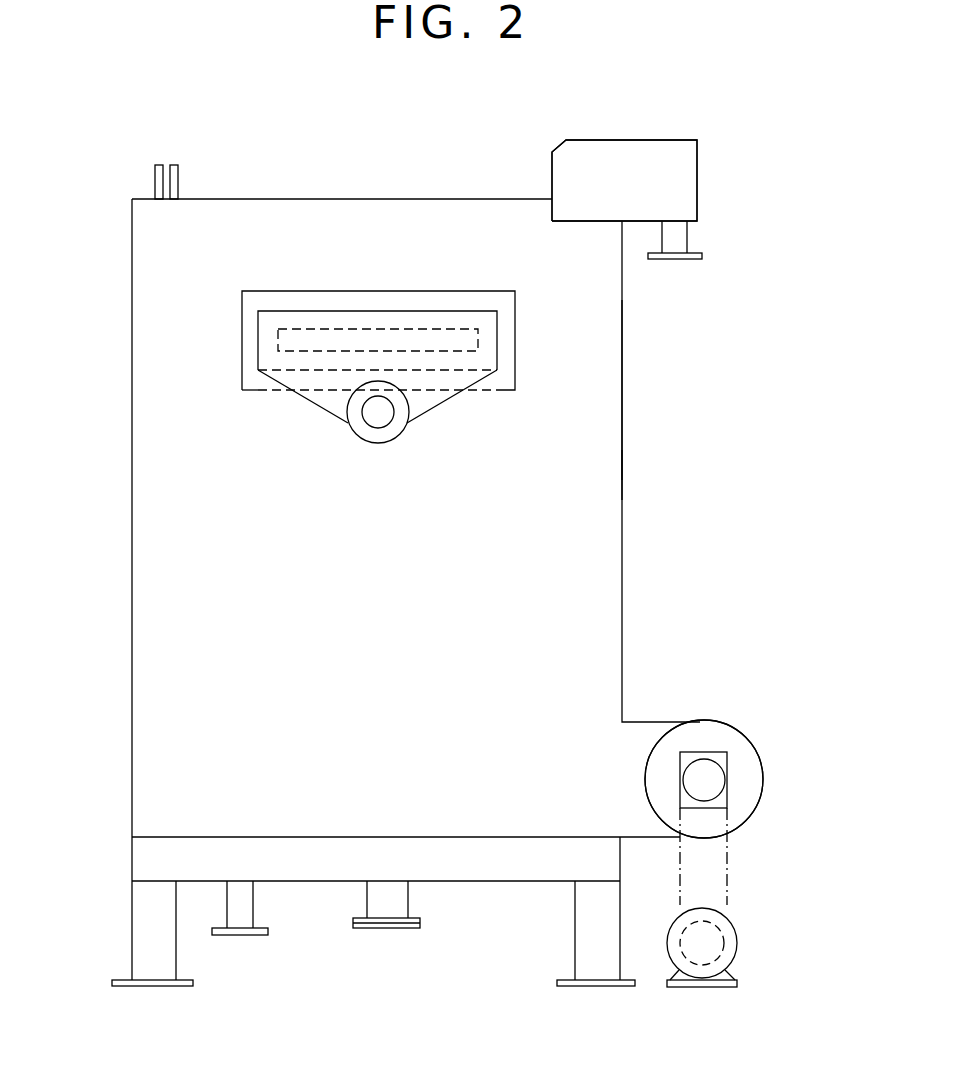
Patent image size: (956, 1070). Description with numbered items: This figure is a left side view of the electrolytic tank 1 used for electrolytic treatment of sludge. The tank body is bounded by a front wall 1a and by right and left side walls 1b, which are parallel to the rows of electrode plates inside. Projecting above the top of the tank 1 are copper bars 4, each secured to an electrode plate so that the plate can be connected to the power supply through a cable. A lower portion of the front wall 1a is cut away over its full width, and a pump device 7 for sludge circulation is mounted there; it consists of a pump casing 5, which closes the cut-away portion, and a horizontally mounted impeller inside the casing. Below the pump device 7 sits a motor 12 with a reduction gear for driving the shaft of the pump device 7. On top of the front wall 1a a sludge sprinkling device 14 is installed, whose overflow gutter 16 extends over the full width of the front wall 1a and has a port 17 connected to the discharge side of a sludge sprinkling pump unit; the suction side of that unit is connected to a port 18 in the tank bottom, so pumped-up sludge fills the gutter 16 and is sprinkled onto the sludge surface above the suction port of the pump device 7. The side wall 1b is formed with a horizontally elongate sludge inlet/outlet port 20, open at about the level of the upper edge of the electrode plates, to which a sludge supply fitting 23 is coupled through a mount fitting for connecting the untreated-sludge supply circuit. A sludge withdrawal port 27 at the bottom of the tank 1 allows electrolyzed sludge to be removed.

The electrolytic tank 1 is at (378, 550).
The front wall 1a is at (624, 400).
The side wall 1b is at (568, 482).
The copper bar 4 is at (159, 165).
The pump casing 5 is at (730, 738).
The pump device 7 is at (725, 701).
The motor 12 is at (710, 946).
The sludge sprinkling device 14 is at (696, 104).
The overflow gutter 16 is at (675, 189).
The port 17 is at (680, 240).
The port 18 is at (244, 912).
The sludge inlet/outlet port 20 is at (378, 339).
The sludge supply fitting 23 is at (421, 318).
The sludge withdrawal port 27 is at (390, 902).